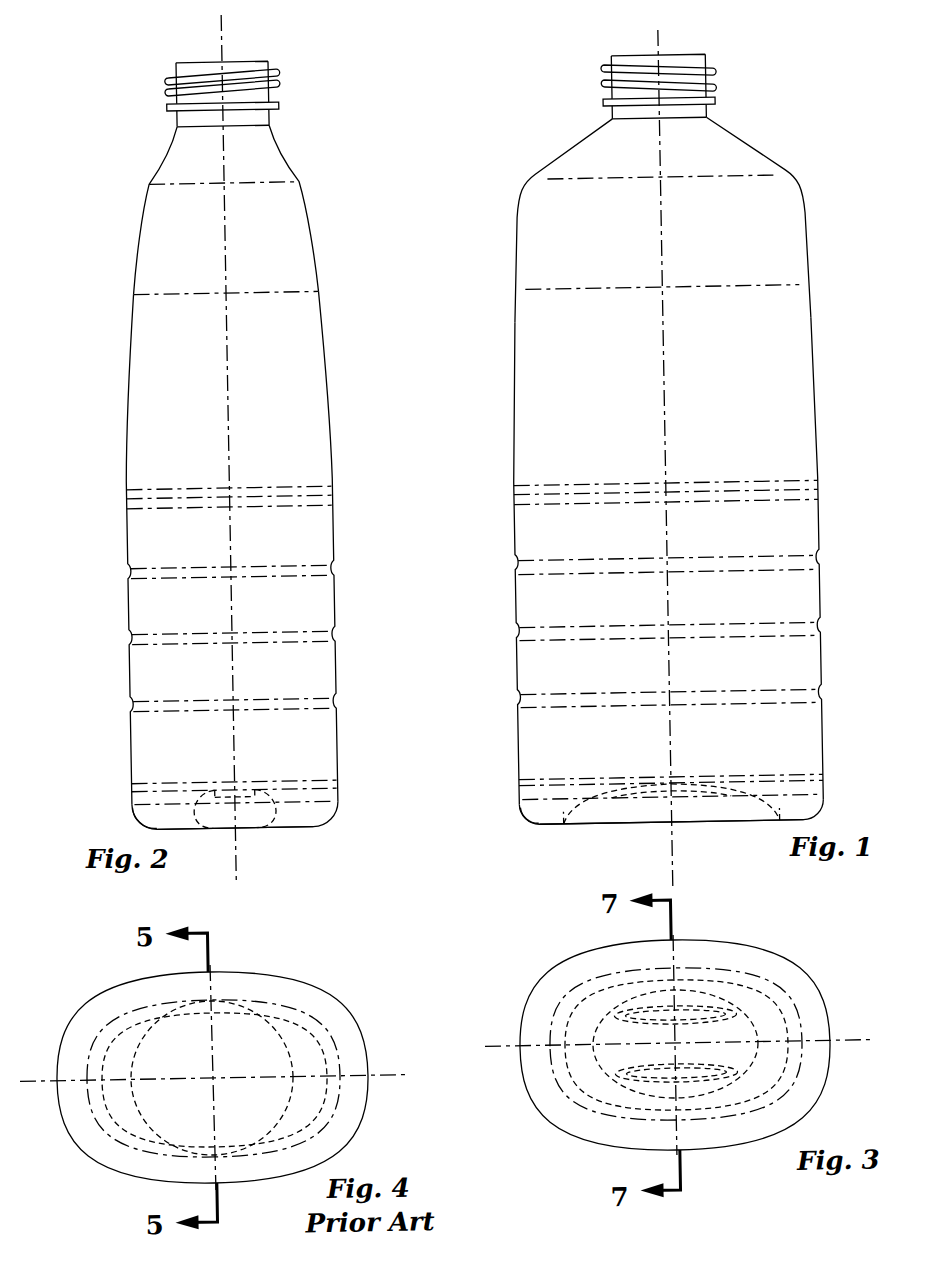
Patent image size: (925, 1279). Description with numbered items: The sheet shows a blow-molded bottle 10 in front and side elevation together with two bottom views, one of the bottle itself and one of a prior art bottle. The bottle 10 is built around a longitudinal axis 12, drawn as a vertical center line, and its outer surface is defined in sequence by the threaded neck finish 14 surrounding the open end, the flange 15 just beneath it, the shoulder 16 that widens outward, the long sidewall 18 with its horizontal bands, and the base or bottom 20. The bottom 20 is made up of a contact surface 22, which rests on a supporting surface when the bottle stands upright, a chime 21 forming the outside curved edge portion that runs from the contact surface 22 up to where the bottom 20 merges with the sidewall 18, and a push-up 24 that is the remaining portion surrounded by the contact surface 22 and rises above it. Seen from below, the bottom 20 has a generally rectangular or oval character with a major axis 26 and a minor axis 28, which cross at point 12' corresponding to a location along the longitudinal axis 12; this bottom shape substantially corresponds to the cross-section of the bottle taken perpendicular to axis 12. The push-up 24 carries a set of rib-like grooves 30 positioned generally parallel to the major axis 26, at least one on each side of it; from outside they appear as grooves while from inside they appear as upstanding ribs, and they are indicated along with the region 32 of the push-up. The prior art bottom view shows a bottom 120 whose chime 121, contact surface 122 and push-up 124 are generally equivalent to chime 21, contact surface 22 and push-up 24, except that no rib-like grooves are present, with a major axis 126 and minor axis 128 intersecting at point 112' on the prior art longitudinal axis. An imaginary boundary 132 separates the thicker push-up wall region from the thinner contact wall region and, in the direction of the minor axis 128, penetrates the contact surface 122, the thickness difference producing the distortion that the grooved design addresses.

In FIG. 1, the bottle 10 is at (500, 265).
In FIG. 2, the longitudinal axis 12 is at (267, 443).
In FIG. 1, the longitudinal axis 12 is at (619, 445).
In FIG. 2, the neck finish 14 is at (253, 95).
In FIG. 1, the neck finish 14 is at (628, 90).
In FIG. 2, the flange 15 is at (280, 108).
In FIG. 1, the flange 15 is at (603, 103).
In FIG. 2, the shoulder 16 is at (266, 153).
In FIG. 1, the shoulder 16 is at (605, 152).
In FIG. 2, the sidewall 18 is at (330, 380).
In FIG. 1, the sidewall 18 is at (510, 472).
In FIG. 2, the bottom 20 is at (313, 828).
In FIG. 1, the bottom 20 is at (533, 823).
In FIG. 3, the bottom 20 is at (530, 1135).
In FIG. 2, the chime 21 is at (312, 818).
In FIG. 1, the chime 21 is at (540, 806).
In FIG. 3, the chime 21 is at (770, 960).
In FIG. 2, the contact surface 22 is at (300, 830).
In FIG. 1, the contact surface 22 is at (550, 823).
In FIG. 3, the contact surface 22 is at (558, 1002).
In FIG. 2, the push-up 24 is at (222, 803).
In FIG. 1, the push-up 24 is at (613, 797).
In FIG. 3, the push-up 24 is at (657, 1032).
In FIG. 3, the major axis 26 is at (835, 1043).
In FIG. 3, the minor axis 28 is at (682, 1152).
In FIG. 2, the rib-like grooves 30 is at (208, 800).
In FIG. 1, the rib-like grooves 30 is at (687, 785).
In FIG. 3, the rib-like grooves 30 is at (692, 1045).
In FIG. 3, the recessed region 32 is at (598, 1065).
In FIG. 3, the point 12' is at (608, 1114).
In FIG. 4, the point 112' is at (121, 1021).
In FIG. 4, the prior art bottom 120 is at (88, 1185).
In FIG. 4, the chime 121 is at (280, 985).
In FIG. 4, the contact surface 122 is at (325, 1048).
In FIG. 4, the push-up 124 is at (258, 1060).
In FIG. 4, the major axis 126 is at (368, 1078).
In FIG. 4, the minor axis 128 is at (217, 1187).
In FIG. 4, the boundary 132 is at (287, 1107).